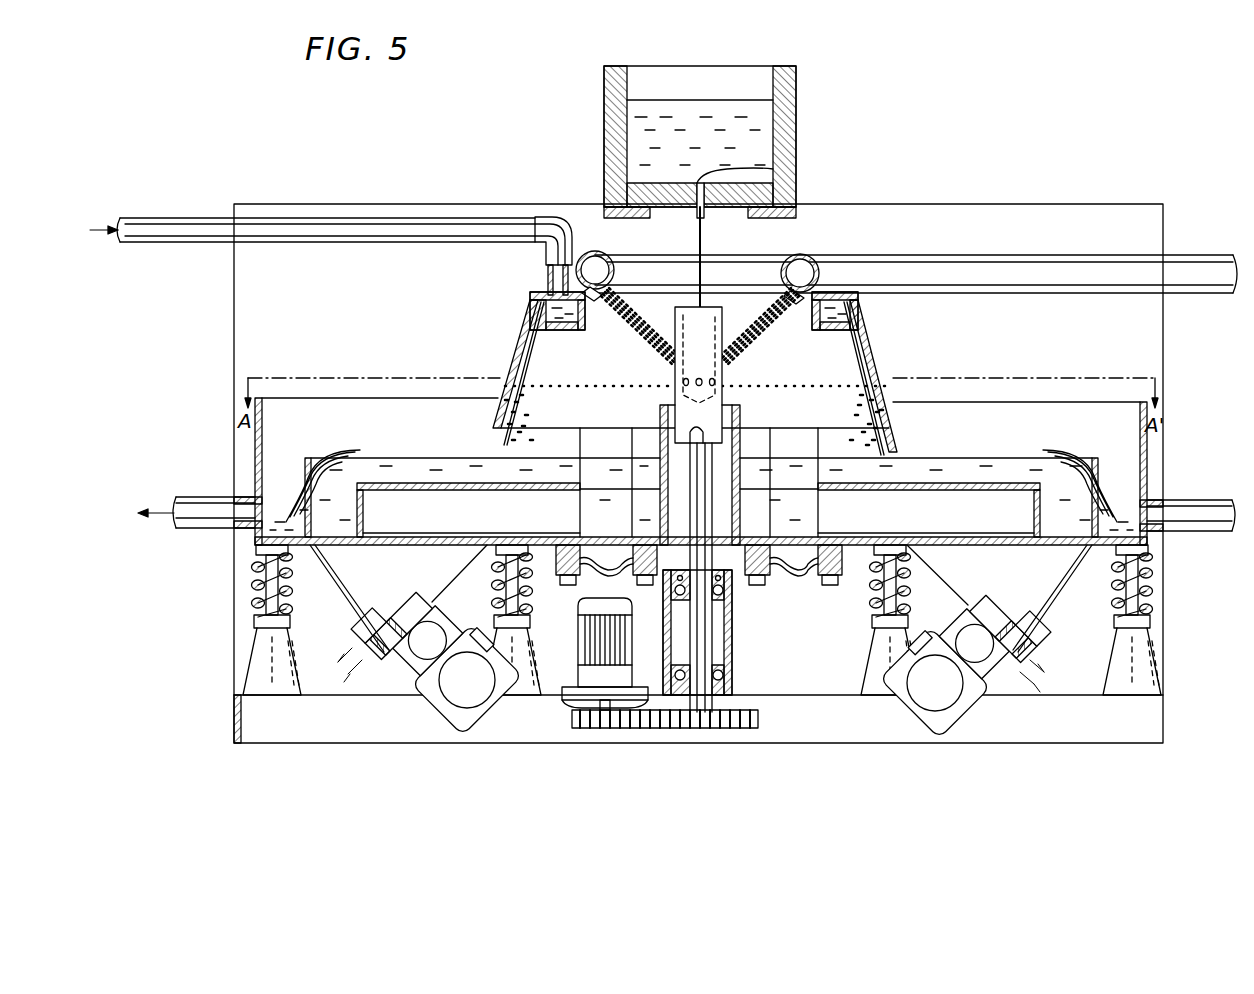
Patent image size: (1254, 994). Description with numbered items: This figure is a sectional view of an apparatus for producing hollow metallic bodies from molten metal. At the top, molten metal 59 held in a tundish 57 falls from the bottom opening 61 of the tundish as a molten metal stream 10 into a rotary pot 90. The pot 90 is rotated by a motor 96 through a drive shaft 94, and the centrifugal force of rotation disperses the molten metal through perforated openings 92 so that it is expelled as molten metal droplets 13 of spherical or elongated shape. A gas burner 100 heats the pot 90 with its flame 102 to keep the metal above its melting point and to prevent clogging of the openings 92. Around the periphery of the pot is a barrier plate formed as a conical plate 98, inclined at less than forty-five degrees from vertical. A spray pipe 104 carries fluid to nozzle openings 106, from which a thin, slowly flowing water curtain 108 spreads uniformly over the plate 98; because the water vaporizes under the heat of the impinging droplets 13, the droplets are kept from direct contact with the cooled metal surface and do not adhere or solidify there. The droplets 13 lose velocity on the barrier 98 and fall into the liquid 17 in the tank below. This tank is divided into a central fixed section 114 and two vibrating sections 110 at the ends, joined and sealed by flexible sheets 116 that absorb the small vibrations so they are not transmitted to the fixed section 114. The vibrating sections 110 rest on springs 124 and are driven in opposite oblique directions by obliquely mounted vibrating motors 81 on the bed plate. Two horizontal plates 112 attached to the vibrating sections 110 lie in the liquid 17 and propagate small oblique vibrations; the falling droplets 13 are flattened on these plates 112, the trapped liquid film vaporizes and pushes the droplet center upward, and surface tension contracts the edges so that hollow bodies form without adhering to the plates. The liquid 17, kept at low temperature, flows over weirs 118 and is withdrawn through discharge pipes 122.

The molten metal 59 is at (745, 105).
The tundish 57 is at (796, 118).
The bottom opening 61 is at (796, 172).
The molten metal stream 10 is at (704, 236).
The spray pipe 104 is at (546, 265).
The rotary pot 90 is at (718, 300).
The gas burner 100 is at (808, 256).
The flame 102 is at (750, 323).
The conical plate 98 is at (864, 328).
The nozzle openings 106 is at (859, 300).
The water curtain 108 is at (863, 336).
The molten metal droplets 13 is at (810, 387).
The perforated openings 92 is at (716, 382).
The drive shaft 94 is at (712, 572).
The fixed section 114 is at (722, 570).
The motor 96 is at (590, 608).
The liquid 17 is at (312, 454).
The vibrating sections 110 is at (368, 412).
The horizontal plates 112 is at (414, 484).
The weirs 118 is at (304, 474).
The discharge pipes 122 is at (217, 504).
The flexible sheets 116 is at (606, 570).
The spring 124 is at (282, 602).
The vibrator unit 81 is at (466, 730).